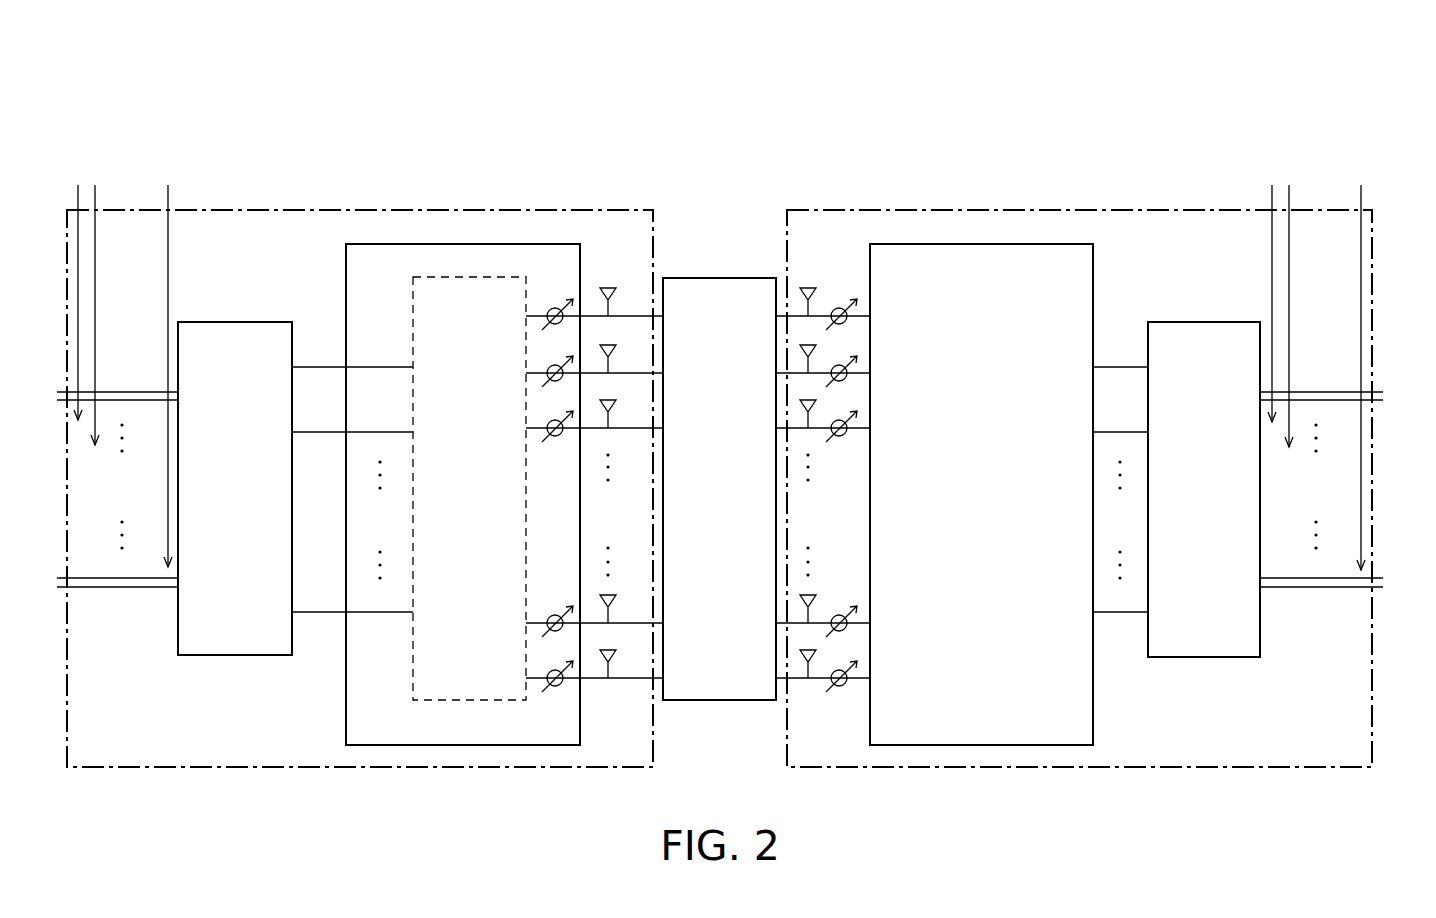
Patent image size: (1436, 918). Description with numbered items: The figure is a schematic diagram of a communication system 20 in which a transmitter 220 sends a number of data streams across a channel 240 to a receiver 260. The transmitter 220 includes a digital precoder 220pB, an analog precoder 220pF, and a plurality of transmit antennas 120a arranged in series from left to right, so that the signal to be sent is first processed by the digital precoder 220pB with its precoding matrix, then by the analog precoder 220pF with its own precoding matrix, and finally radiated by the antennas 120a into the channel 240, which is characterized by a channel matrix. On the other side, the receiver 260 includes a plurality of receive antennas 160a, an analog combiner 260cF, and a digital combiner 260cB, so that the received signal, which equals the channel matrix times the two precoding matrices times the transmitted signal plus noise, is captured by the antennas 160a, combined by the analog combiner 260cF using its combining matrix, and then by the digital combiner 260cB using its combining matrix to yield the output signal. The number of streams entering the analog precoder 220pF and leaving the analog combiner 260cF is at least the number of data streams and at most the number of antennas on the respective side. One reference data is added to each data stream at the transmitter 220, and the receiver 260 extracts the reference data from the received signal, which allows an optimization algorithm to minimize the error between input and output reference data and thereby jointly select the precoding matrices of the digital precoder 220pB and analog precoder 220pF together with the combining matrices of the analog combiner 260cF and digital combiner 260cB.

The communication system 20 is at (1186, 102).
The transmitter 220 is at (358, 210).
The receiver 260 is at (1077, 210).
The digital precoder 220pB is at (200, 503).
The analog precoder 220pF is at (430, 736).
The antennas 120a is at (608, 288).
The channel 240 is at (700, 503).
The antennas 160a is at (808, 288).
The analog combiner 260cF is at (948, 503).
The digital combiner 260cB is at (1170, 503).